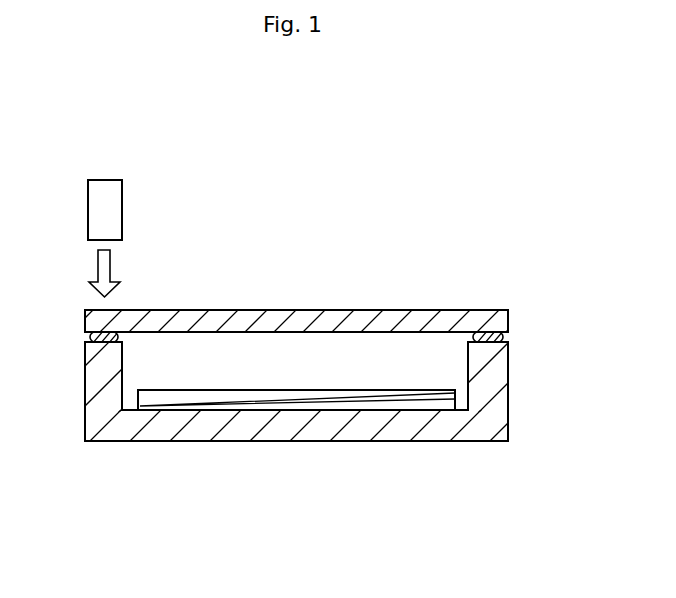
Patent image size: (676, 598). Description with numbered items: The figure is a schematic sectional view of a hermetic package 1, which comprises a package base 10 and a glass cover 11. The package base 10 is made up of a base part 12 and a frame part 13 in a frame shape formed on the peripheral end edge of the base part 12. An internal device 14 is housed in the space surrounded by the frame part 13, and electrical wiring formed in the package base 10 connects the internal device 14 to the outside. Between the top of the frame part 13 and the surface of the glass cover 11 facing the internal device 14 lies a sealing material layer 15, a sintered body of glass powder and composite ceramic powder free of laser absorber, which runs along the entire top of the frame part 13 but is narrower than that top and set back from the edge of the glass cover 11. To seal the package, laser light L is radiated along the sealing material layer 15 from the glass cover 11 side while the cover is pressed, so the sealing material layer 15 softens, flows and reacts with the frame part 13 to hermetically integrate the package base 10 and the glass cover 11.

The hermetic package 1 is at (357, 182).
The package base 10 is at (420, 442).
The glass cover 11 is at (290, 320).
The base part 12 is at (310, 428).
The frame part 13 is at (98, 384).
The internal device 14 is at (205, 397).
The sealing material layer 15 is at (96, 337).
The laser light L is at (108, 266).